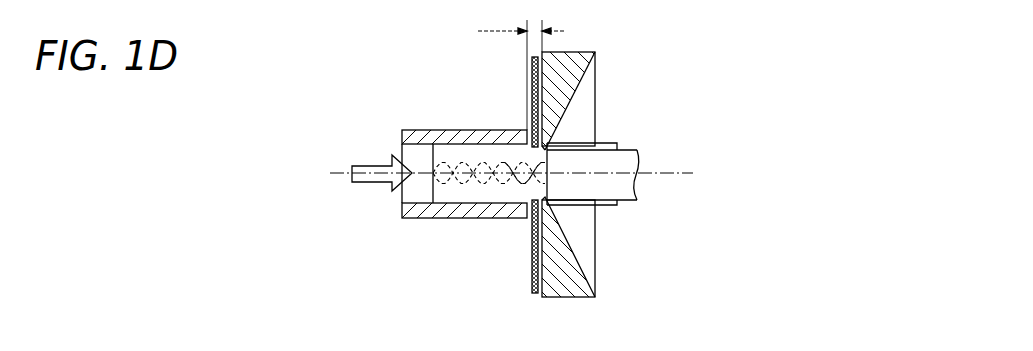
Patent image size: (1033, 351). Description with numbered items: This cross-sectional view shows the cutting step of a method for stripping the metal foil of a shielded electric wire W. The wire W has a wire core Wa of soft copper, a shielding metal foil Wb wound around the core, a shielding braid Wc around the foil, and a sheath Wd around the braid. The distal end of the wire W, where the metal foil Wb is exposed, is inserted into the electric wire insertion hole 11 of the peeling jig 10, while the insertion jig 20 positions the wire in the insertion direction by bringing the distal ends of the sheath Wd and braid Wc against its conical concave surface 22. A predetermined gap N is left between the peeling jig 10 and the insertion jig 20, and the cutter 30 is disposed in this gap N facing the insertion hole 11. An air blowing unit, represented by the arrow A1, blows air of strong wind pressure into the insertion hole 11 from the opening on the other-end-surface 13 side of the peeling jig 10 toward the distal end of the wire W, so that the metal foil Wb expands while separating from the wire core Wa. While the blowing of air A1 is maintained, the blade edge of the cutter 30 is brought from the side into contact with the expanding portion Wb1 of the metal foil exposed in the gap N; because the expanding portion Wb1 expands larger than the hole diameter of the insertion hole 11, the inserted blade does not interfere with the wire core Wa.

The peeling jig 10 is at (436, 152).
The electric wire insertion hole 11 is at (413, 196).
The other-end-surface 13 is at (402, 133).
The insertion jig 20 is at (568, 150).
The conical concave surface 22 is at (580, 90).
The cutter 30 is at (531, 103).
The predetermined gap N is at (522, 66).
The arrow representing air blowing unit A1 is at (377, 168).
The shielded electric wire W is at (626, 189).
The wire core Wa is at (450, 166).
The metal foil Wb is at (447, 197).
The expanding portion of the metal foil Wb1 is at (527, 188).
The braid Wc is at (598, 130).
The sheath Wd is at (629, 148).